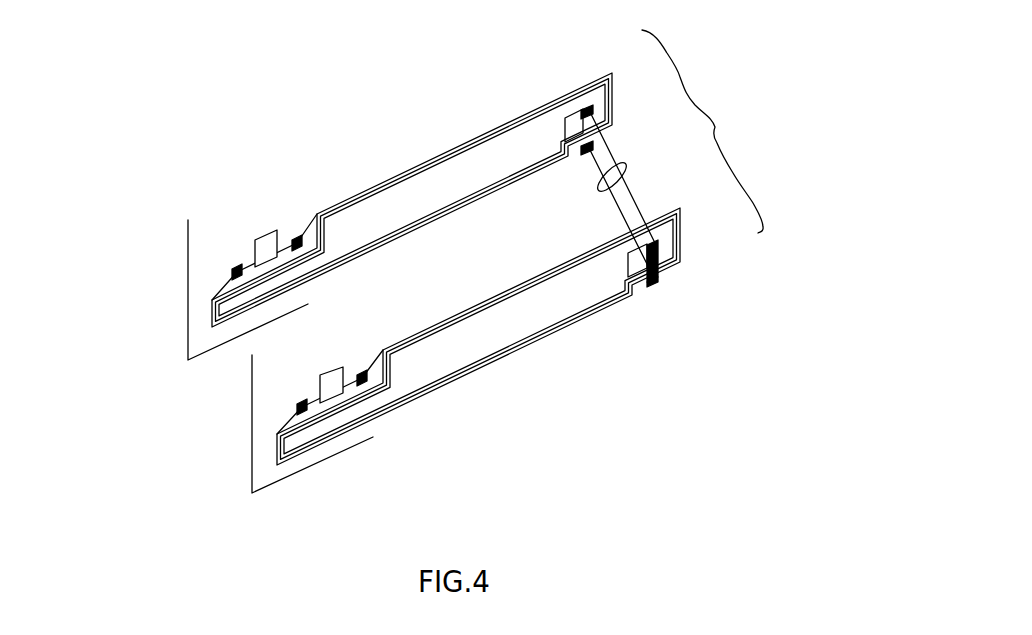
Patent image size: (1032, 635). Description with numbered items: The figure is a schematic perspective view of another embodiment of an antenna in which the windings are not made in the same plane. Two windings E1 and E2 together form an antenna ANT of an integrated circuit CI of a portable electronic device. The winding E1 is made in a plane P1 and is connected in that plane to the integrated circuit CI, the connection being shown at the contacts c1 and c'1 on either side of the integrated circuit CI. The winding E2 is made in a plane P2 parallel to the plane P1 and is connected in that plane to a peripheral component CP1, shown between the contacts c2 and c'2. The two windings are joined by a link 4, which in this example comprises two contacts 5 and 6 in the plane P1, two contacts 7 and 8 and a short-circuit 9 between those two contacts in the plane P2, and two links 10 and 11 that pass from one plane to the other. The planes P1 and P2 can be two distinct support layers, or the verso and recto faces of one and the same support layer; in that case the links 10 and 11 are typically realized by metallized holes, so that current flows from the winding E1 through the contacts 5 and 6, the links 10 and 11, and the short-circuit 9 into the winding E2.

The link 4 is at (622, 166).
The contact 5 is at (578, 106).
The contact 6 is at (580, 148).
The contact 7 is at (660, 250).
The contact 8 is at (652, 290).
The short-circuit 9 is at (660, 268).
The link 10 is at (630, 192).
The link 11 is at (617, 213).
The winding E1 is at (612, 73).
The winding E2 is at (680, 207).
The antenna ANT is at (702, 131).
The plane P1 is at (192, 313).
The plane P2 is at (257, 459).
The first contact of element E1 c1 is at (234, 266).
The second contact of element E1 c'1 is at (313, 203).
The integrated circuit CI is at (266, 233).
The first contact of element E2 c2 is at (299, 402).
The second contact of element E2 c'2 is at (378, 338).
The peripheral component CP1 is at (331, 372).